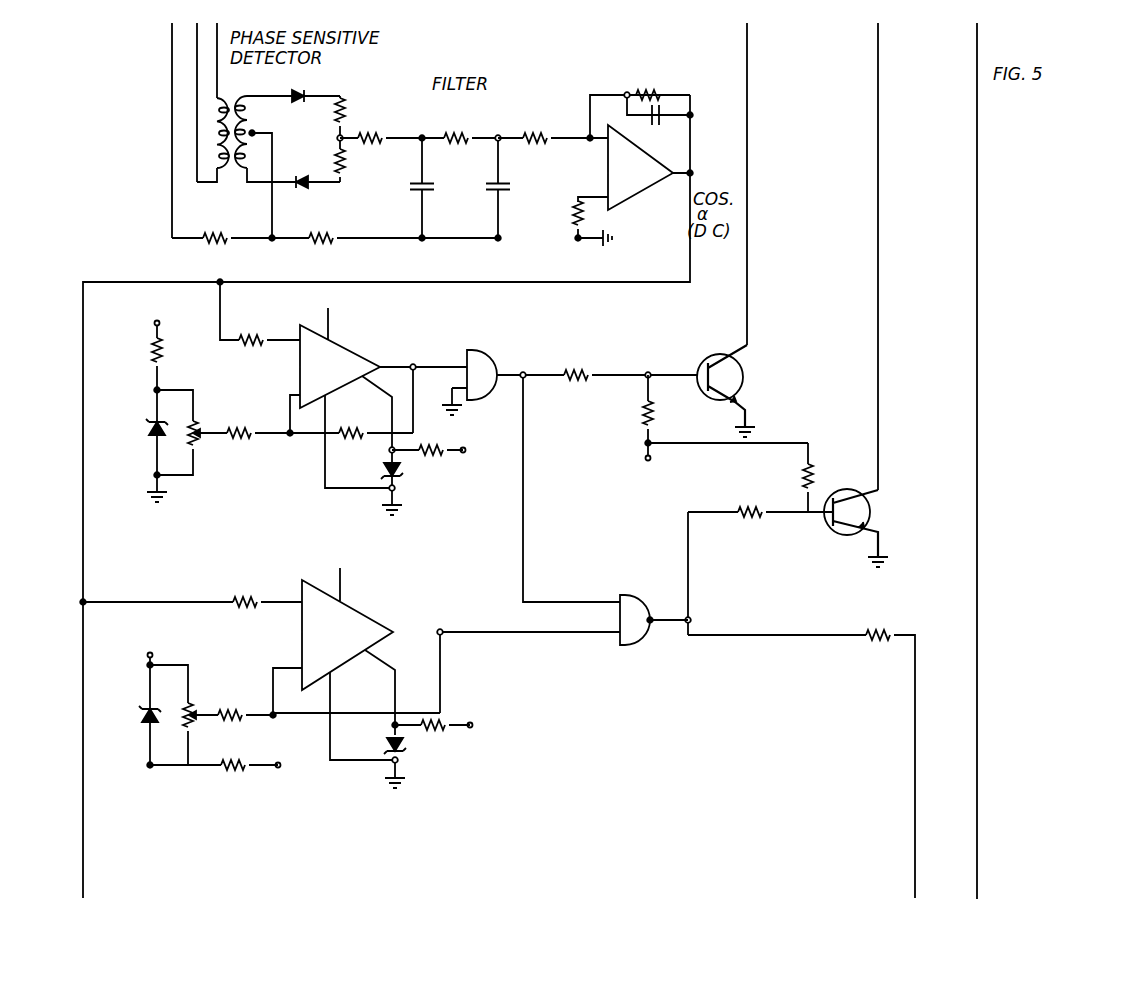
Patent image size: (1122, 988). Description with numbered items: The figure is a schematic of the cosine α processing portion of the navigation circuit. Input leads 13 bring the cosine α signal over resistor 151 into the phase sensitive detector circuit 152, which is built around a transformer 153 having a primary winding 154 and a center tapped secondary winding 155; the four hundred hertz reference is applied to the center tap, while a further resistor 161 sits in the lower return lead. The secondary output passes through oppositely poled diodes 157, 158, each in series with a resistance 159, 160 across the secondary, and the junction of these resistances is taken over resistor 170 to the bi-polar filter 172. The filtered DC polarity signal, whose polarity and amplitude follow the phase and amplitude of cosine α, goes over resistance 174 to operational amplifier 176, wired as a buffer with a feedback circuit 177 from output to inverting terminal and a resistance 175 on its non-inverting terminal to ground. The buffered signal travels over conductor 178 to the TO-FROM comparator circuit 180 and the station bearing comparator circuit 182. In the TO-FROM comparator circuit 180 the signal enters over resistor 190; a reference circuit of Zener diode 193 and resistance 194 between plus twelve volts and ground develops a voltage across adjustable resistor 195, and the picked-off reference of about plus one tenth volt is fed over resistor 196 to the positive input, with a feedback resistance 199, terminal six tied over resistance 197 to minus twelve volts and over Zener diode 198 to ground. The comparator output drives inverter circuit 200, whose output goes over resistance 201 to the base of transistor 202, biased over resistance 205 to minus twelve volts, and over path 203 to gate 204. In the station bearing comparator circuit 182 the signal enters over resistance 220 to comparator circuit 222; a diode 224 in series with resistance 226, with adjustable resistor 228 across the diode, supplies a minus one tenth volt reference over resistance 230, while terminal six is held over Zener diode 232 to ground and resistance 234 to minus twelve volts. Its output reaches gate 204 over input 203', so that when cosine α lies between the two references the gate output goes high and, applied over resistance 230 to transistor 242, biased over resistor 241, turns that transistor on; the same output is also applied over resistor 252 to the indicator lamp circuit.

The input leads from receiver 13 is at (172, 60).
The resistor 151 is at (222, 226).
The phase sensitive detector circuit 152 is at (291, 81).
The transformer 153 is at (227, 127).
The primary winding 154 is at (230, 130).
The center tapped secondary winding 155 is at (260, 119).
The diode 157 is at (312, 94).
The diode 158 is at (316, 173).
The resistance 159 is at (345, 108).
The resistance 160 is at (345, 170).
The resistor 161 is at (328, 226).
The resistor 170 is at (378, 133).
The bi-polar filter 172 is at (460, 169).
The resistance 174 is at (548, 116).
The resistor 175 is at (570, 218).
The operational amplifier 176 is at (652, 162).
The feedback circuit 177 is at (657, 85).
The conductor 178 is at (662, 286).
The TO-FROM comparator circuit 180 is at (419, 347).
The station bearing comparator circuit 182 is at (373, 609).
The resistor 190 is at (270, 325).
The Zener diode 193 is at (145, 430).
The resistance 194 is at (153, 360).
The adjustable resistor 195 is at (203, 426).
The resistor 196 is at (252, 433).
The resistance 197 is at (440, 442).
The Zener diode 198 is at (398, 478).
The feedback resistor 199 is at (357, 448).
The inverter circuit 200 is at (478, 362).
The resistance 201 is at (597, 474).
The transistor 202 is at (713, 352).
The path 203 is at (572, 590).
The input 203' is at (530, 620).
The gate 204 is at (634, 589).
The resistance 205 is at (645, 418).
The resistance 220 is at (255, 580).
The comparator circuit 222 is at (302, 633).
The diode 224 is at (128, 730).
The resistance 226 is at (226, 782).
The adjustable resistor 228 is at (195, 715).
The resistance 230 is at (748, 524).
The Zener diode 232 is at (404, 760).
The resistance 234 is at (444, 724).
The resistor 241 is at (800, 480).
The transistor 242 is at (846, 487).
The resistor 252 is at (898, 616).